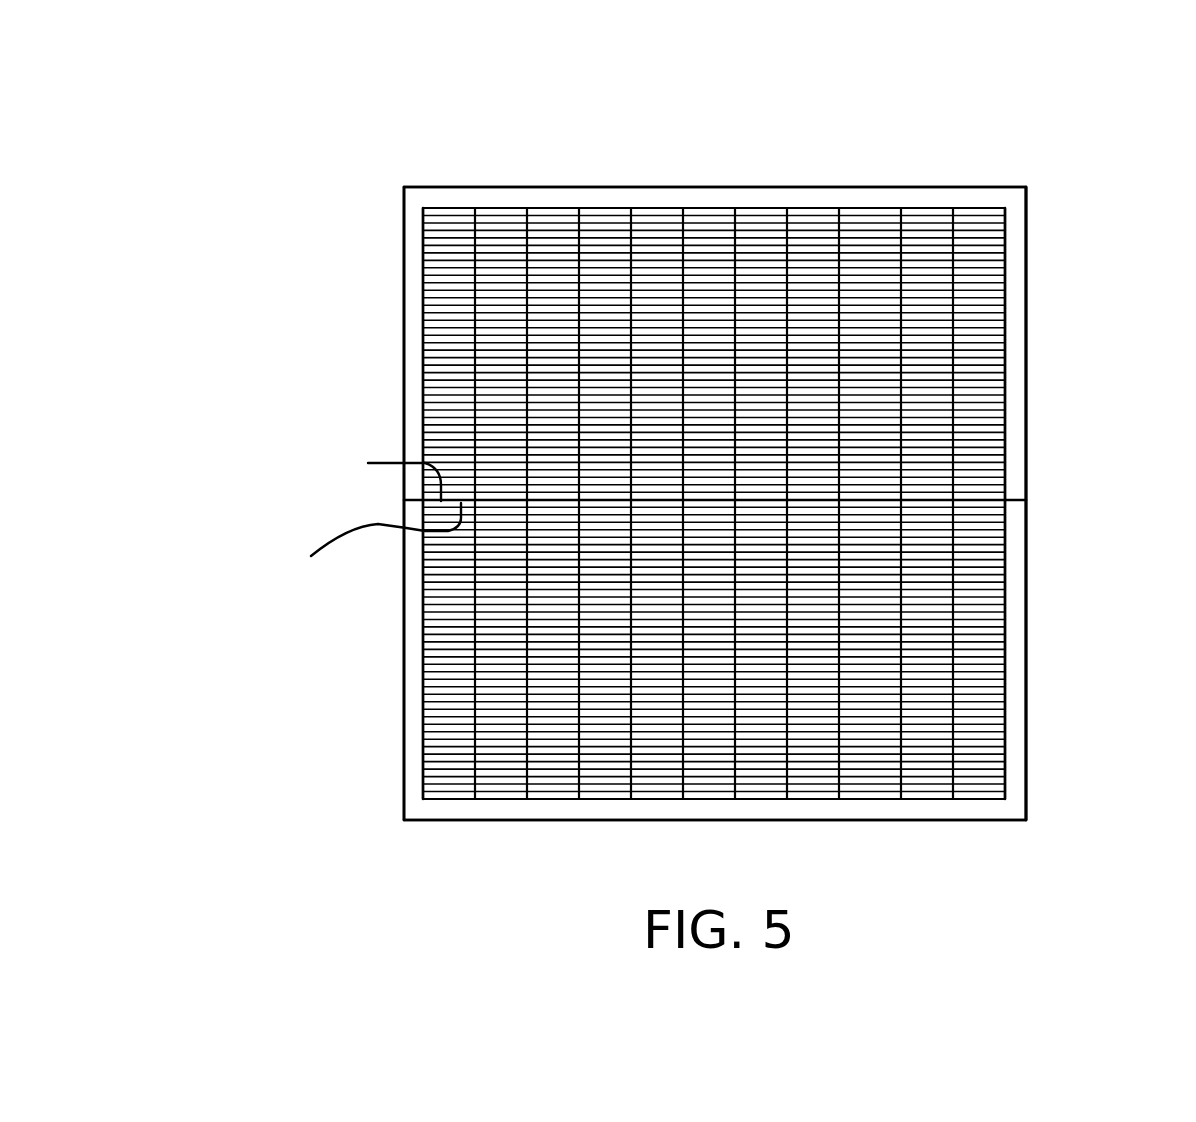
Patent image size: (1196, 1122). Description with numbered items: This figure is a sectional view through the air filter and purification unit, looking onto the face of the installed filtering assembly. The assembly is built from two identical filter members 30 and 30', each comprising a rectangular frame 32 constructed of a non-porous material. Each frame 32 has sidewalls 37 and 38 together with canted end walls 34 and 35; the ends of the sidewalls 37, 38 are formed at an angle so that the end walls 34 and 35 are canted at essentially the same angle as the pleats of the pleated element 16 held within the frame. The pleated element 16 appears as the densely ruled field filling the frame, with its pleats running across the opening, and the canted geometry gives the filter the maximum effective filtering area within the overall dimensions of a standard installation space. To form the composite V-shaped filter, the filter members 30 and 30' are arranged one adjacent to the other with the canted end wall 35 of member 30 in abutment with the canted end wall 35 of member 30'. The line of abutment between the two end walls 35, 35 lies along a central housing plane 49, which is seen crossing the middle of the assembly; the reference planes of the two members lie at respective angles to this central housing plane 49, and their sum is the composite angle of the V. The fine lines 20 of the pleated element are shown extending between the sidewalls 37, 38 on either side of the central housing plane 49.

The pleated element 16 is at (486, 180).
The photovoltaic cell strips 20 is at (967, 320).
The filter member 30 is at (715, 429).
The filter member 30' is at (618, 824).
The rectangular frame 32 is at (1045, 405).
The canted end wall 34 is at (891, 188).
The canted end wall 35 is at (360, 455).
The sidewall 37 is at (403, 256).
The sidewall 38 is at (1005, 237).
The central housing plane 49 is at (1018, 492).